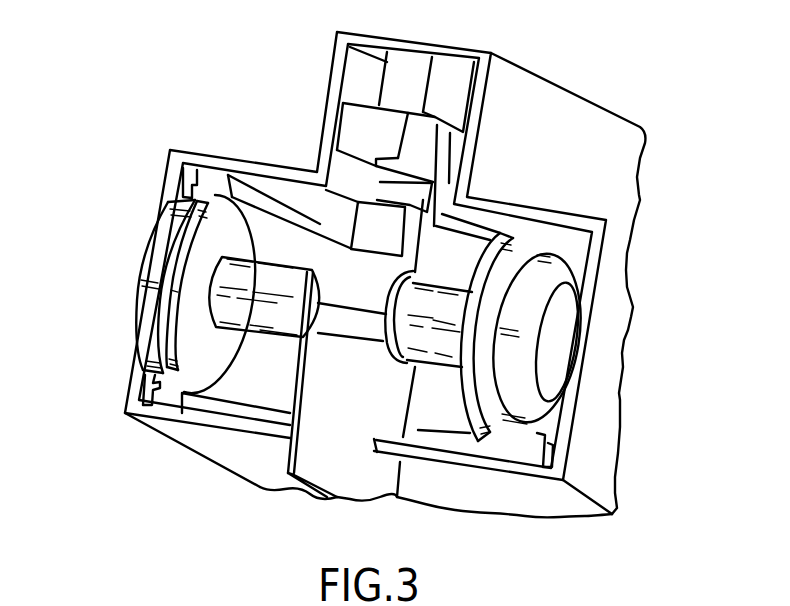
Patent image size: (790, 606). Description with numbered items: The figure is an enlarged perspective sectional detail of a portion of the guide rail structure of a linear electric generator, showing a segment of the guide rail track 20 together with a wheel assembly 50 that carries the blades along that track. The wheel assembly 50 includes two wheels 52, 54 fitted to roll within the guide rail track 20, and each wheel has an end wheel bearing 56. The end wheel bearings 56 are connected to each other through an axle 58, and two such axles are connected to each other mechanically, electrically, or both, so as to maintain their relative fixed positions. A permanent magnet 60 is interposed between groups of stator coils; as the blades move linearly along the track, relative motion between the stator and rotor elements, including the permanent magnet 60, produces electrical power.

The guide rail track 20 is at (560, 208).
The wheel assembly 50 is at (134, 323).
The wheel 52 is at (152, 241).
The wheel 54 is at (513, 428).
The end wheel bearing 56 is at (522, 430).
The axle 58 is at (276, 256).
The permanent magnet 60 is at (260, 393).